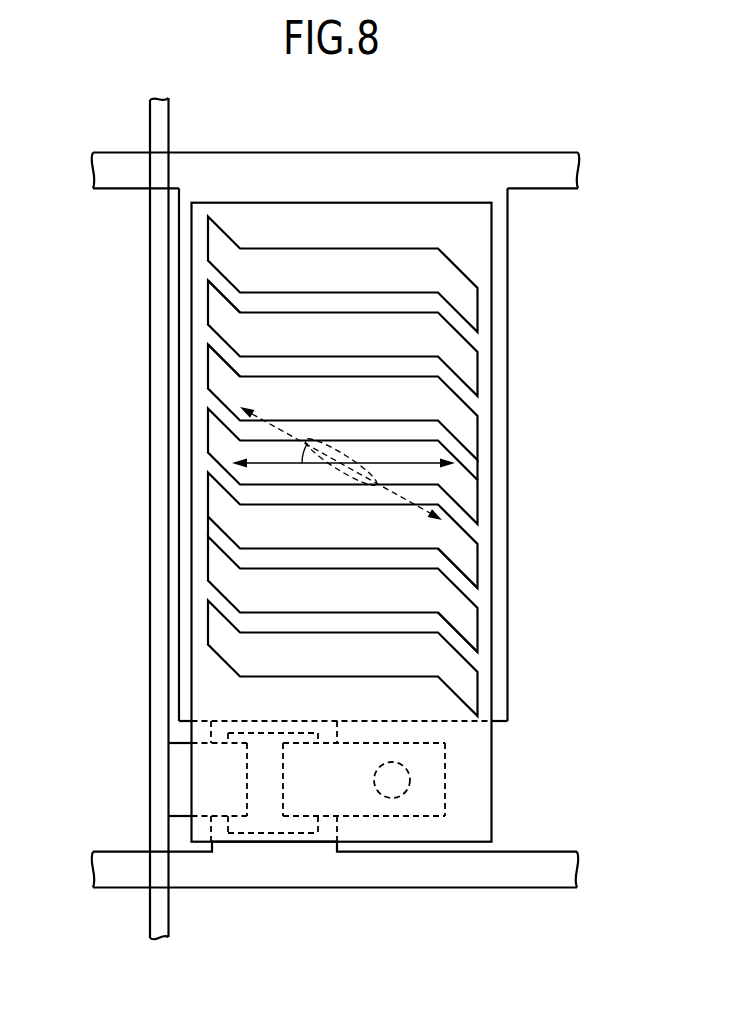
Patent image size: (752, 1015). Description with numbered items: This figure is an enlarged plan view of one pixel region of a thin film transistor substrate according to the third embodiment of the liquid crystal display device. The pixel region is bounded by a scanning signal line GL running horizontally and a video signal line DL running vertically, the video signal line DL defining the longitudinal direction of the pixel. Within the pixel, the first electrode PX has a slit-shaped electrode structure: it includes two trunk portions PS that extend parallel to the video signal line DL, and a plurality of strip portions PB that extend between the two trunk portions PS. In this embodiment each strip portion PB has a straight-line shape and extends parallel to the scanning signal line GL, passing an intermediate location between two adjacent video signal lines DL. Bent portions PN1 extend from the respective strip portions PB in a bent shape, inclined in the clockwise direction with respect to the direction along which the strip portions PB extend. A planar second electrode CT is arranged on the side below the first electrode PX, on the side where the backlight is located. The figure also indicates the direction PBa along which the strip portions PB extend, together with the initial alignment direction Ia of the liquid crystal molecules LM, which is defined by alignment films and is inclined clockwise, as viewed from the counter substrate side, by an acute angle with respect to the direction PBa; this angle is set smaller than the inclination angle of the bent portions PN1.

The video signal line DL is at (158, 613).
The second electrode CT is at (424, 166).
The scanning signal line GL is at (391, 875).
The first electrode PX is at (513, 762).
The strip portion PB is at (328, 372).
The bent portion PN1 is at (226, 294).
The trunk portion PS is at (203, 552).
The direction along which the strip portions extend PBa is at (402, 463).
The initial alignment direction Ia is at (302, 442).
The liquid crystal molecule LM is at (359, 450).